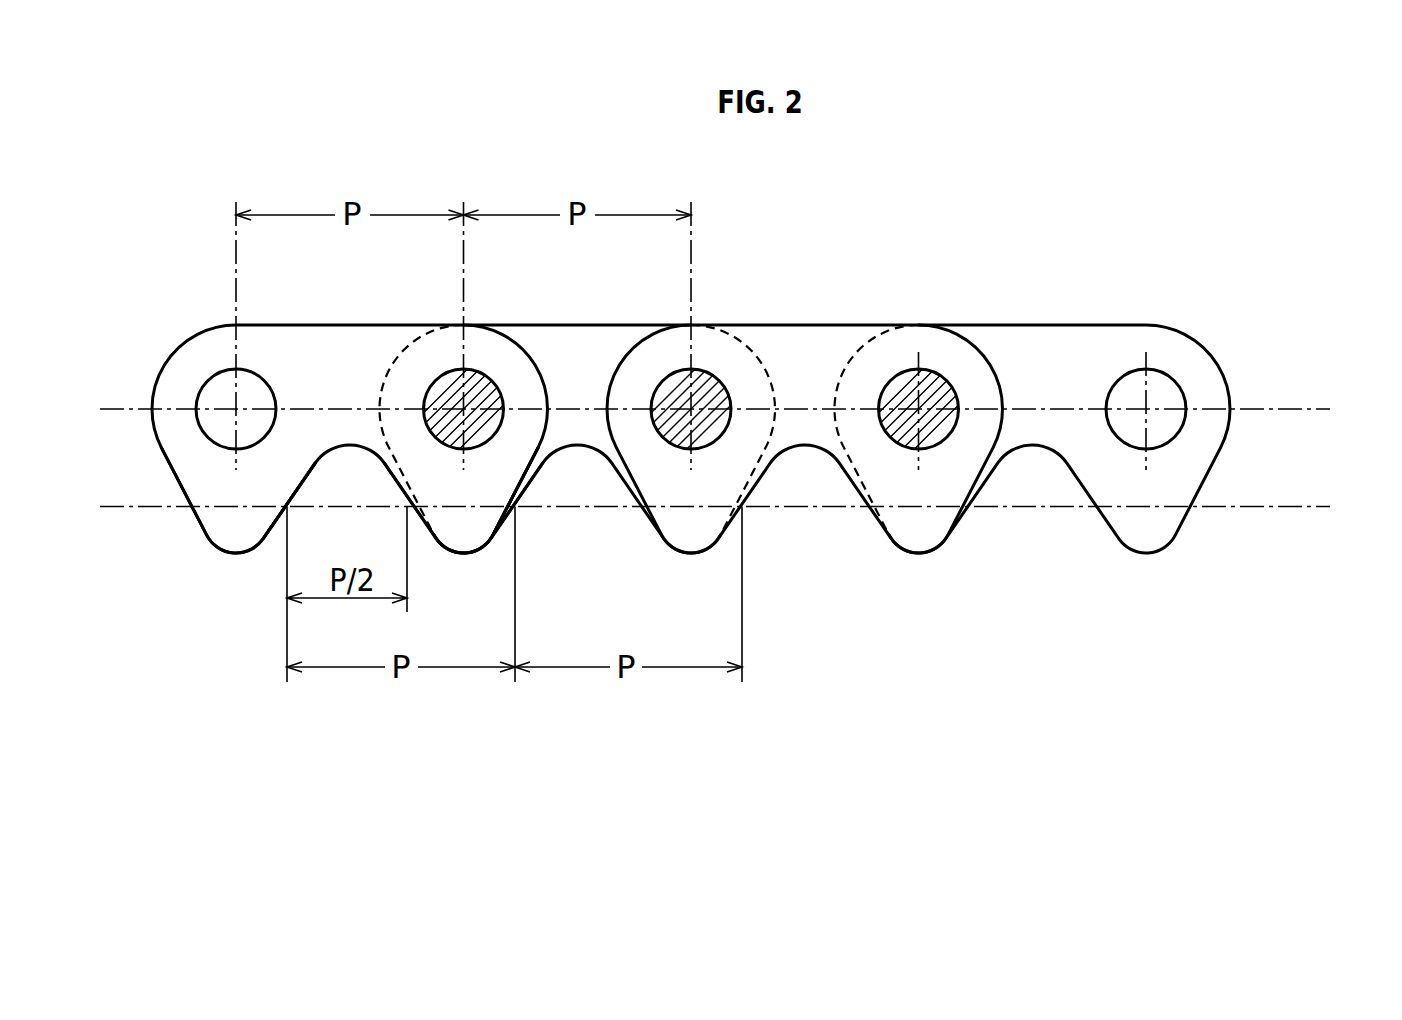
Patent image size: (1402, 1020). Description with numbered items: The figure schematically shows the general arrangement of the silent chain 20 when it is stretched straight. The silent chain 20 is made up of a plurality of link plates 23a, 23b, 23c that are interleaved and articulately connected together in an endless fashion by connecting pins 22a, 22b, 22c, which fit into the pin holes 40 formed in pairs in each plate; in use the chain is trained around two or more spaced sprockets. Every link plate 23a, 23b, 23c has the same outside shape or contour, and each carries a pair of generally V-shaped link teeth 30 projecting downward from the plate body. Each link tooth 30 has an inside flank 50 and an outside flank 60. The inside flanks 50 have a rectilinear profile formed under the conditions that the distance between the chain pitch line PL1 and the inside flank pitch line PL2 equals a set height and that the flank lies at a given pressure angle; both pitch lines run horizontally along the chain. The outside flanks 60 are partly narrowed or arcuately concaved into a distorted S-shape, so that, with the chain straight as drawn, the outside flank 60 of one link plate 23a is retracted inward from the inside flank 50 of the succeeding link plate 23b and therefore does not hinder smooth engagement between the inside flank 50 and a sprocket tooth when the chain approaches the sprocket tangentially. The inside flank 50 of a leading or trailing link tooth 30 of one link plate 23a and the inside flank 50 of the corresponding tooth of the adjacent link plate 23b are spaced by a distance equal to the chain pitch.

The silent chain 20 is at (1013, 312).
The connecting pin 22a is at (443, 380).
The connecting pin 22b is at (673, 380).
The connecting pin 22c is at (900, 387).
The link plate 23a is at (307, 325).
The link plate 23b is at (548, 325).
The link plate 23c is at (793, 325).
The link tooth 30 is at (228, 522).
The pin hole 40 is at (1160, 388).
The inside flank 50 is at (276, 527).
The outside flank 60 is at (499, 521).
The chain pitch line PL1 is at (1283, 407).
The inside flank pitch line PL2 is at (1262, 510).